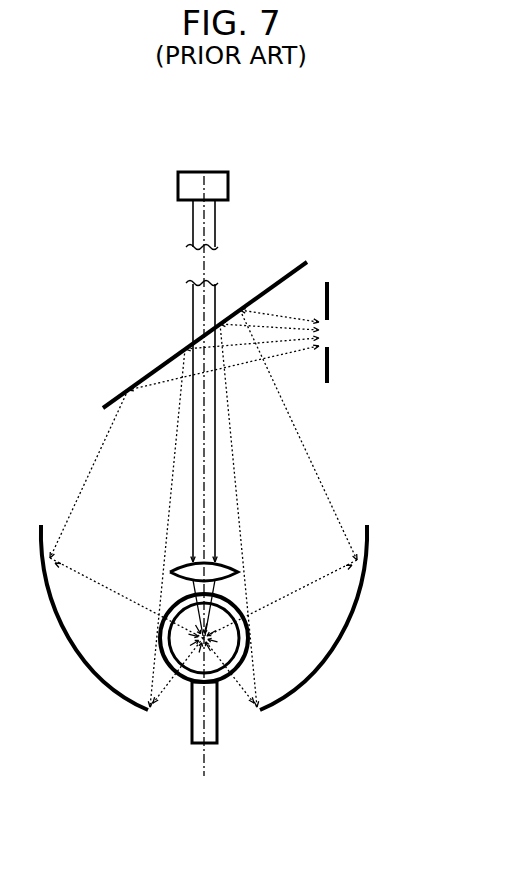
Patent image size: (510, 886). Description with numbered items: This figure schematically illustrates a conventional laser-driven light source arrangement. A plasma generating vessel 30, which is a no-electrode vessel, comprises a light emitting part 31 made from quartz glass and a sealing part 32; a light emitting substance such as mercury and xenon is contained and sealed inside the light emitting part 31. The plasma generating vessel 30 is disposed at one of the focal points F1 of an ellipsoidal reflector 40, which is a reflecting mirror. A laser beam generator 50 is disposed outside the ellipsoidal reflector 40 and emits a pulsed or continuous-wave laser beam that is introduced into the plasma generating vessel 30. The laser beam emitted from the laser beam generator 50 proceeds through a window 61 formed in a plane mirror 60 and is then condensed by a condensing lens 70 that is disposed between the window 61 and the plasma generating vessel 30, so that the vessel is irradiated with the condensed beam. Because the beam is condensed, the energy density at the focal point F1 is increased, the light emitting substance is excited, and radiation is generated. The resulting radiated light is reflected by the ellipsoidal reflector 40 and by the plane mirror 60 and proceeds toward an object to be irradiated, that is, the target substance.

The laser beam generator 50 is at (210, 172).
The plane mirror 60 is at (268, 289).
The window 61 is at (190, 343).
The condensing lens 70 is at (238, 570).
The ellipsoidal reflector 40 is at (338, 637).
The plasma generating vessel 30 is at (268, 681).
The light emitting part 31 is at (243, 664).
The sealing part 32 is at (218, 712).
The focal point F1 is at (238, 604).